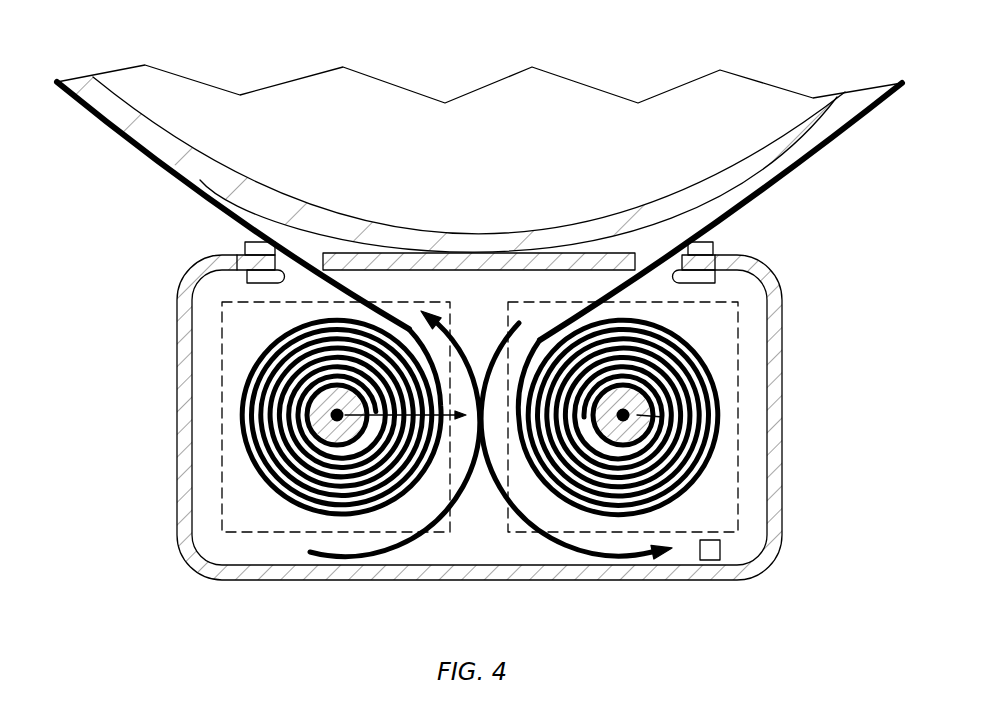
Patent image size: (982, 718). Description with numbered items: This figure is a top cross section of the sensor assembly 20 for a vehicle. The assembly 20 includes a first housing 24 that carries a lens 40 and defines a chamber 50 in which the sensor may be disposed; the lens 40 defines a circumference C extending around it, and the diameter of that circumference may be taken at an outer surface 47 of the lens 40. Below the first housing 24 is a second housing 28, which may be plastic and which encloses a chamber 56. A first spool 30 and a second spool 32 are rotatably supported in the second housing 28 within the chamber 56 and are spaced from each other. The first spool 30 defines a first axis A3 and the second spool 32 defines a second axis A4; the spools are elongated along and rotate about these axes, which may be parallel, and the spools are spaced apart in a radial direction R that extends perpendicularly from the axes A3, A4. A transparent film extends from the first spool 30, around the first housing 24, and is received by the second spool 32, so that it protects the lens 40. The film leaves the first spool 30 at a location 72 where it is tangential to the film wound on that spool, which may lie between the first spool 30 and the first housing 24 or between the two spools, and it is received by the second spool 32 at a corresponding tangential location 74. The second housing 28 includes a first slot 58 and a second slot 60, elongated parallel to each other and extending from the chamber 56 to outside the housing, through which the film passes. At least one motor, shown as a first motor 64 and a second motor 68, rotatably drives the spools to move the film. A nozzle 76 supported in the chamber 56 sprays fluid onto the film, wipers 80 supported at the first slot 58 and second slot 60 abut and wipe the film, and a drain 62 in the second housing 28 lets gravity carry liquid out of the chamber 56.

The assembly 20 is at (496, 389).
The first housing 24 is at (479, 202).
The second housing 28 is at (180, 410).
The first spool 30 is at (252, 442).
The second spool 32 is at (705, 435).
The lens 40 is at (365, 230).
The outer surface 47 is at (272, 227).
The chamber 50 is at (458, 178).
The chamber 56 is at (767, 315).
The first slot 58 is at (306, 252).
The second slot 60 is at (652, 255).
The drain 62 is at (720, 549).
The first motor 64 is at (220, 345).
The second motor 68 is at (740, 343).
The location 72 is at (405, 330).
The location 74 is at (556, 333).
The nozzle 76 is at (188, 284).
The wipers 80 is at (240, 246).
The first axis A3 is at (337, 415).
The second axis A4 is at (623, 415).
The radial direction R is at (337, 415).
The circumference C is at (243, 207).